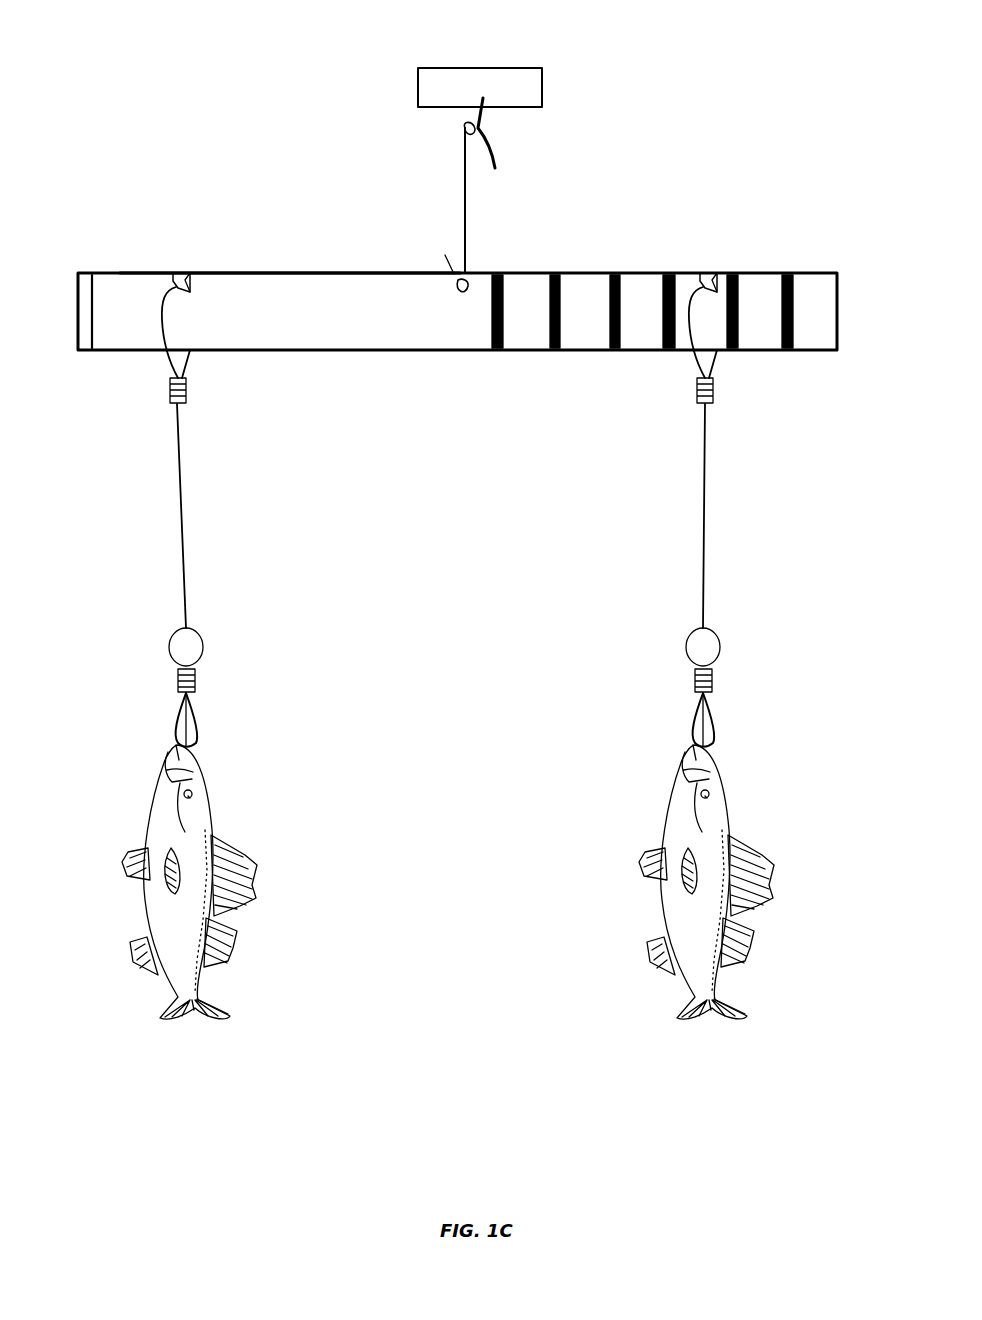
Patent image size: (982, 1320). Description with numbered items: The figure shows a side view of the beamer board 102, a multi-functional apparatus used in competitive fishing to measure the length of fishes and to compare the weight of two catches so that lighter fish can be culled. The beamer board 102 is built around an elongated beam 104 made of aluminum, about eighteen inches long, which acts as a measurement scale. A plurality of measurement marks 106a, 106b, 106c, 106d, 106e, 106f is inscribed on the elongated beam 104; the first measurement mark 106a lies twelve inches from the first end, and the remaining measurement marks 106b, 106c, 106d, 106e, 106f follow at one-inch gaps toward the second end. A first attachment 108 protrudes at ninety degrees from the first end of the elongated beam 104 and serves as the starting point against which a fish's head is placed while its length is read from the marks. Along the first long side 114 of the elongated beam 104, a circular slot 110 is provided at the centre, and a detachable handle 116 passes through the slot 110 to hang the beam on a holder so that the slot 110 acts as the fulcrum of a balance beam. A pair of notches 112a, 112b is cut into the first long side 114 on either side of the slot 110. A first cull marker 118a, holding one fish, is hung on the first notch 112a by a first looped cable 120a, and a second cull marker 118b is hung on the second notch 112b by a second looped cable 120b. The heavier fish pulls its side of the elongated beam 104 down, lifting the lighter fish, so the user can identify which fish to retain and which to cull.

The beamer board 102 is at (97, 178).
The elongated beam 104 is at (230, 352).
The first measurement mark 106a is at (496, 352).
The measurement mark 106b is at (556, 272).
The measurement mark 106c is at (614, 352).
The measurement mark 106d is at (671, 272).
The measurement mark 106e is at (733, 352).
The measurement mark 106f is at (788, 272).
The first attachment 108 is at (92, 272).
The slot 110 is at (472, 272).
The first notch 112a is at (183, 272).
The second notch 112b is at (706, 276).
The first long side 114 is at (290, 272).
The detachable handle 116 is at (467, 214).
The first cull marker 118a is at (183, 518).
The second cull marker 118b is at (706, 543).
The first looped cable 120a is at (166, 348).
The second looped cable 120b is at (693, 382).